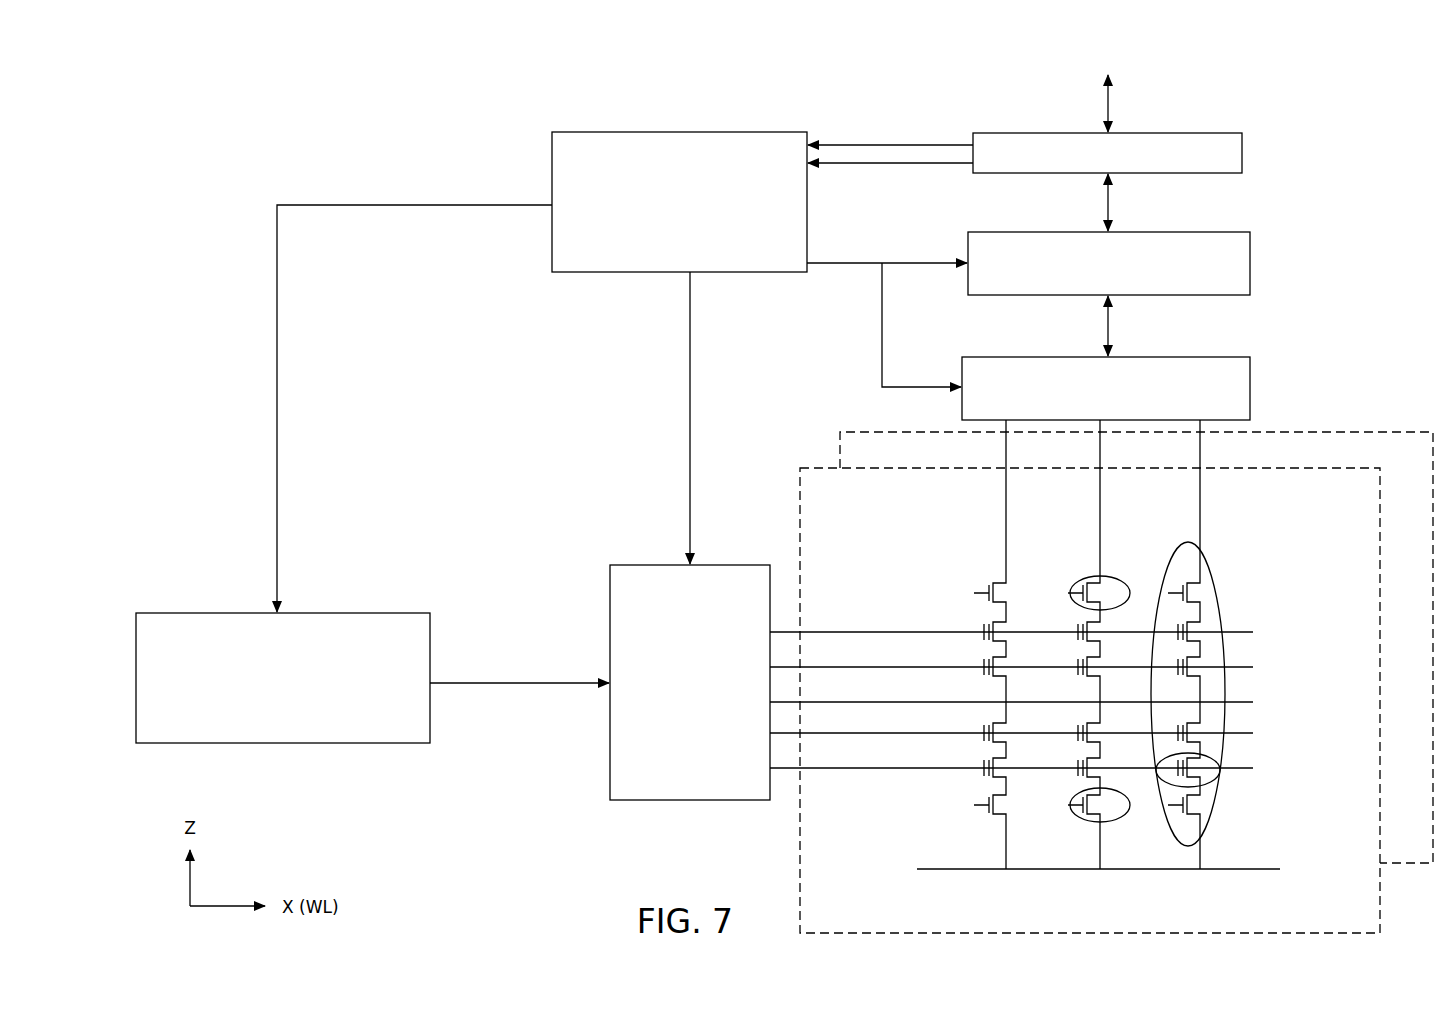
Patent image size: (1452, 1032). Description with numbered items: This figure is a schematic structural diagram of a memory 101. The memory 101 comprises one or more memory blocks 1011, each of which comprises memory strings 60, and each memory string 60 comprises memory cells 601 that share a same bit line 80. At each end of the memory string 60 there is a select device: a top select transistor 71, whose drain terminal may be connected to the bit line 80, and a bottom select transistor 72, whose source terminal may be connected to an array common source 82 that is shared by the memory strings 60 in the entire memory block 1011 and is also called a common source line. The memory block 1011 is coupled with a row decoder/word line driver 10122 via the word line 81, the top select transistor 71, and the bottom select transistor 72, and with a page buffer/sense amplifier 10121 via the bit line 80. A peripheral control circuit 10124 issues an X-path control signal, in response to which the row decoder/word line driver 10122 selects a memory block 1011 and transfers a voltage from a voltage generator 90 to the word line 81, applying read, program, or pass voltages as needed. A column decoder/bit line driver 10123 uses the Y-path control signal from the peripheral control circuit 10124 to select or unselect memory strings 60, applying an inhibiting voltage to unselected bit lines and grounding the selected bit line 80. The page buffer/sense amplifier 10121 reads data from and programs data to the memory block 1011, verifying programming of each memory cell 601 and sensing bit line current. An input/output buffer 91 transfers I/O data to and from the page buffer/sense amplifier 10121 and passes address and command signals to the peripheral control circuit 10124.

The memory 101 is at (855, 42).
The peripheral control circuit 10124 is at (668, 132).
The input/output buffer 91 is at (1228, 153).
The column decoder/bit line driver 10123 is at (1240, 270).
The page buffer/sense amplifier 10121 is at (1240, 393).
The voltage generator 90 is at (226, 632).
The row decoder/word line driver 10122 is at (622, 753).
The memory block 1011 is at (1101, 676).
The bit line 80 is at (1003, 560).
The word line 81 is at (958, 785).
The array common source 82 is at (962, 876).
The top select transistor 71 is at (1115, 578).
The bottom select transistor 72 is at (1112, 822).
The memory string 60 is at (1225, 658).
The memory cell 601 is at (1210, 785).